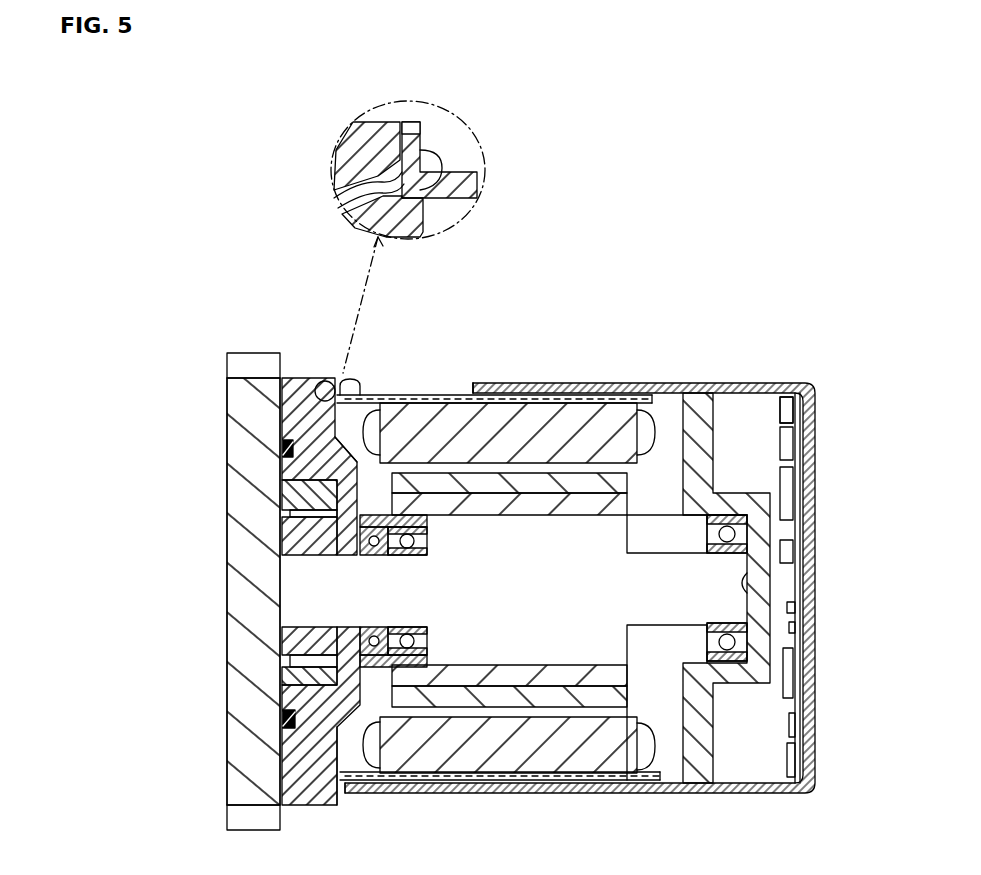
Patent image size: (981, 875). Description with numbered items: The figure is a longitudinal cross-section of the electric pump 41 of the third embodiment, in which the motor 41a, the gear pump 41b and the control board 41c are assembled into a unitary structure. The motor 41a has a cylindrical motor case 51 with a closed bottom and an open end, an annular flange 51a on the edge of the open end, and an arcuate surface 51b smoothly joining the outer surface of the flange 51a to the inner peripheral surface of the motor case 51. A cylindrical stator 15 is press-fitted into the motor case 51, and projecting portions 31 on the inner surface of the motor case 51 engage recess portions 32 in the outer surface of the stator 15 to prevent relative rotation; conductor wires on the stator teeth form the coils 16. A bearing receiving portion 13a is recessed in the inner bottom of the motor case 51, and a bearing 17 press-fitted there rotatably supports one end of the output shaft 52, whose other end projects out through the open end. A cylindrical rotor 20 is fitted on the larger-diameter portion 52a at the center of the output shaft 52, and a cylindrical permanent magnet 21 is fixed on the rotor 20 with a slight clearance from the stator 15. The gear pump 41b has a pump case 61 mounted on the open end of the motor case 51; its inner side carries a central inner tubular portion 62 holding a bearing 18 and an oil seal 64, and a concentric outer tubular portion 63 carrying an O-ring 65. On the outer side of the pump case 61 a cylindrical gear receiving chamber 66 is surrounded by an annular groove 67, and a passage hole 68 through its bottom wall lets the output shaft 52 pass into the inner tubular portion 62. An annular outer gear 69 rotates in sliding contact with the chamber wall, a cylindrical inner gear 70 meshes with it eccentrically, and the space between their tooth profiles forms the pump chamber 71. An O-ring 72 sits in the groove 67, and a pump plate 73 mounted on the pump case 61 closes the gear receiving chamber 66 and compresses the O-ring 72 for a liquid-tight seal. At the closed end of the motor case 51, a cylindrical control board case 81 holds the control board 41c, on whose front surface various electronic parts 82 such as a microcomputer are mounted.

The bearing receiving portion 13a is at (752, 583).
The stator 15 is at (550, 410).
The coils 16 is at (650, 442).
The bearing 17 is at (737, 507).
The bearing 18 is at (400, 556).
The rotor 20 is at (632, 504).
The permanent magnet 21 is at (632, 483).
The projecting portions 31 is at (463, 392).
The recess portions 32 is at (508, 588).
The electric pump 41 is at (632, 270).
The motor 41a is at (473, 387).
The gear pump 41b is at (353, 456).
The control board 41c is at (777, 410).
The motor case 51 is at (385, 387).
The flange 51a is at (345, 385).
The arcuate surface 51b is at (425, 165).
The output shaft 52 is at (655, 627).
The larger-diameter portion 52a is at (630, 537).
The pump case 61 is at (292, 375).
The inner tubular portion 62 is at (365, 517).
The outer tubular portion 63 is at (408, 237).
The oil seal 64 is at (370, 556).
The O-ring 65 is at (318, 376).
The gear receiving chamber 66 is at (363, 675).
The groove 67 is at (300, 725).
The passage hole 68 is at (372, 627).
The outer gear 69 is at (282, 492).
The inner gear 70 is at (282, 548).
The pump chamber 71 is at (282, 660).
The O-ring 72 is at (282, 720).
The pump plate 73 is at (232, 583).
The control board case 81 is at (778, 383).
The electronic parts 82 is at (787, 710).